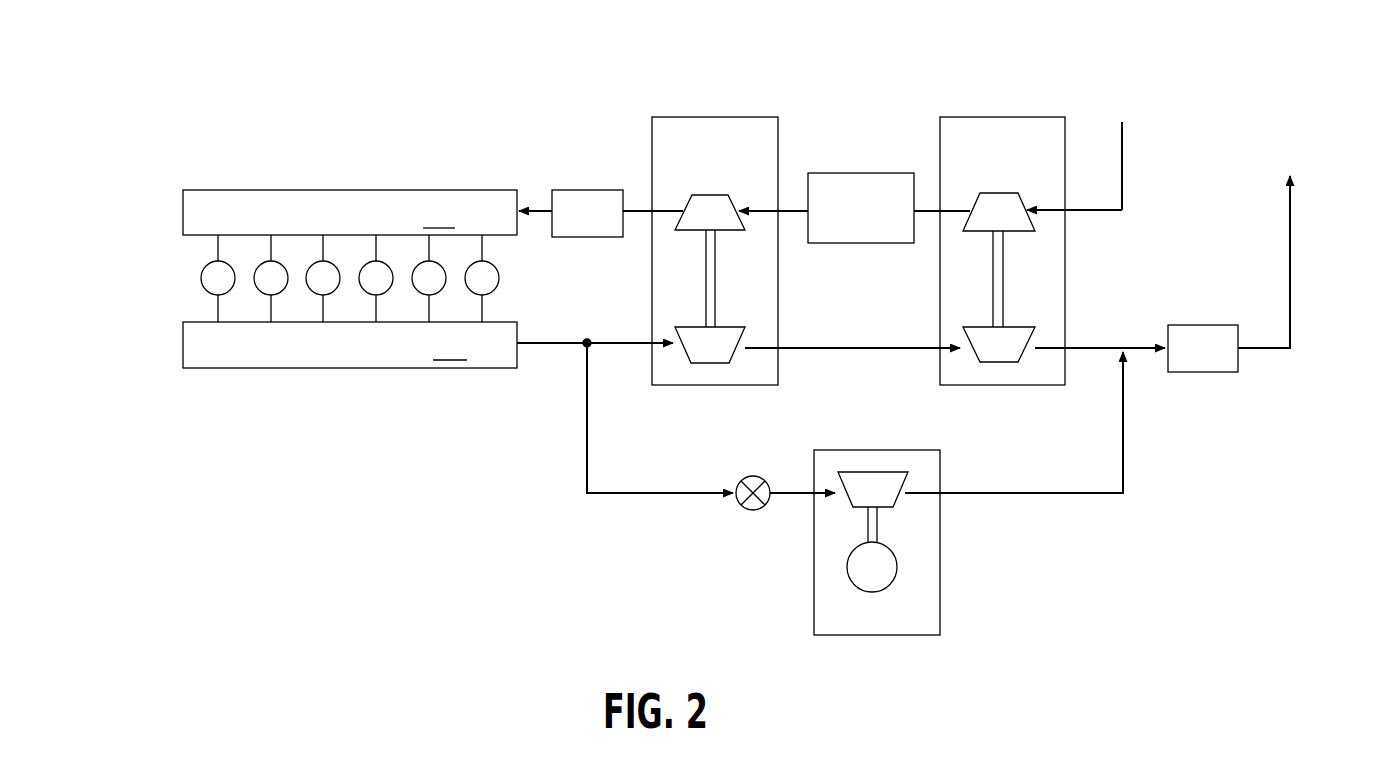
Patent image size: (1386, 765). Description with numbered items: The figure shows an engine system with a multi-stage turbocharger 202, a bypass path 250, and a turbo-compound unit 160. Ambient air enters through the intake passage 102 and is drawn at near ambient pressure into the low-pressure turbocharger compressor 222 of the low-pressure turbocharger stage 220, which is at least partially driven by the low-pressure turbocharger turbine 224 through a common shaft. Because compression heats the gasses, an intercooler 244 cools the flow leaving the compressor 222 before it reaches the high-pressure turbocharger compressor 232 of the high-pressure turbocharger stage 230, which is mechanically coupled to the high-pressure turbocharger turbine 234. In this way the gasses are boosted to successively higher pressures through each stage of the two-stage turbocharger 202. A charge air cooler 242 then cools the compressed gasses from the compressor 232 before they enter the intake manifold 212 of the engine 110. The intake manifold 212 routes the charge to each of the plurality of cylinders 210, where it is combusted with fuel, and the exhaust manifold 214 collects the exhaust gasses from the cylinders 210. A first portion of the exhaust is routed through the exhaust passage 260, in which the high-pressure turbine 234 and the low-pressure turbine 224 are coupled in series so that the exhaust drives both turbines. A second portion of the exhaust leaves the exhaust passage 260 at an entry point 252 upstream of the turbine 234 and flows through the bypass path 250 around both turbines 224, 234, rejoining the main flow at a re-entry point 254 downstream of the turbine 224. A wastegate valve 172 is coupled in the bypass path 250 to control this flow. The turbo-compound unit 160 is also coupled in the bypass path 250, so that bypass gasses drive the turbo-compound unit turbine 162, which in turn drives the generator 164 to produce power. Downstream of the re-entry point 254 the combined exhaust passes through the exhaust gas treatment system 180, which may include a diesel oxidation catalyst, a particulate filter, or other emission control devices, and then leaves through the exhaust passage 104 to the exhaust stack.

The multi-stage turbocharger 202 is at (861, 64).
The engine 110 is at (126, 168).
The plurality of cylinders 210 is at (176, 279).
The intake manifold 212 is at (350, 212).
The exhaust manifold 214 is at (350, 345).
The charge air cooler 242 is at (569, 190).
The high-pressure turbocharger stage 230 is at (730, 171).
The high-pressure turbocharger compressor 232 is at (726, 223).
The high-pressure turbocharger turbine 234 is at (725, 355).
The intercooler 244 is at (817, 173).
The low-pressure turbocharger stage 220 is at (1017, 171).
The low-pressure turbocharger compressor 222 is at (1013, 223).
The low-pressure turbocharger turbine 224 is at (1014, 355).
The intake passage 102 is at (1122, 180).
The exhaust passage 104 is at (1292, 252).
The exhaust gas treatment system 180 is at (1218, 358).
The entry point 252 is at (587, 330).
The re-entry point 254 is at (1125, 331).
The exhaust passage 260 is at (642, 349).
The bypass path 250 is at (585, 458).
The wastegate valve 172 is at (747, 509).
The turbo-compound unit 160 is at (888, 628).
The turbo-compound unit turbine 162 is at (888, 500).
The generator 164 is at (888, 576).